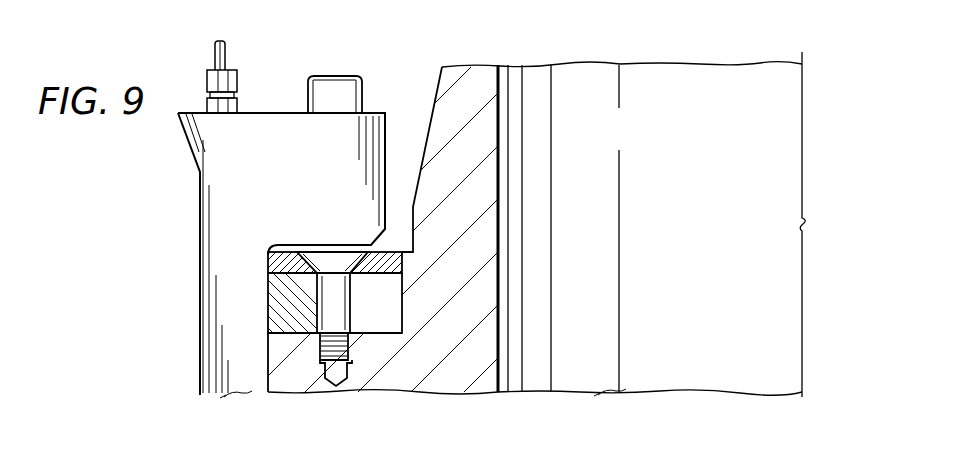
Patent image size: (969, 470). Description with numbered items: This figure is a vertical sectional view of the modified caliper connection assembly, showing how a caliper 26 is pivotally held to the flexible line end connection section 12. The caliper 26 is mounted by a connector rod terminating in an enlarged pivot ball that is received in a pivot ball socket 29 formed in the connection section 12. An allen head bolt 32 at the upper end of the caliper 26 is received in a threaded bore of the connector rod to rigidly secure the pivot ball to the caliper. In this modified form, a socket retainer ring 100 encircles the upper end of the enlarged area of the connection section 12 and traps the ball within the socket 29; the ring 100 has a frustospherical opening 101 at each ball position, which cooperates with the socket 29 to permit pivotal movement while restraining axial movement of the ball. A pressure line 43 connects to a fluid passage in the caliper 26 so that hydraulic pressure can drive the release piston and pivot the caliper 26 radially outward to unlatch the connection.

The flexible line end connection section 12 is at (683, 337).
The caliper 26 is at (230, 157).
The pivot ball socket 29 is at (402, 311).
The allen head bolt 32 is at (346, 84).
The pressure line 43 is at (215, 53).
The socket retainer ring 100 is at (272, 258).
The frustospherical openings 101 is at (330, 300).